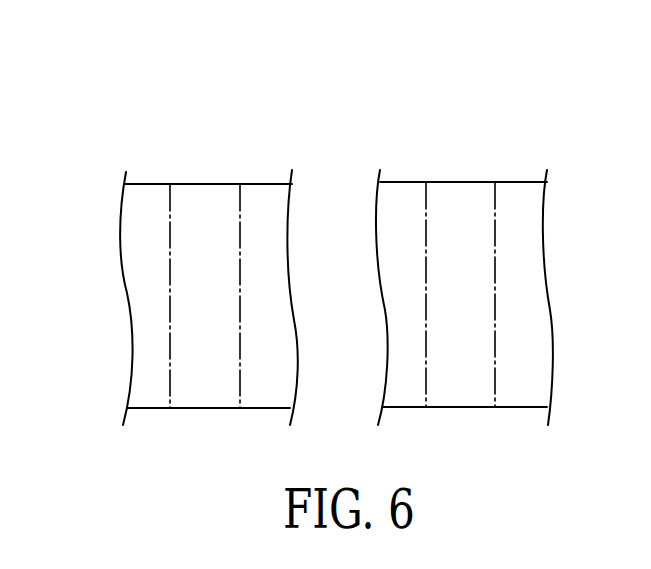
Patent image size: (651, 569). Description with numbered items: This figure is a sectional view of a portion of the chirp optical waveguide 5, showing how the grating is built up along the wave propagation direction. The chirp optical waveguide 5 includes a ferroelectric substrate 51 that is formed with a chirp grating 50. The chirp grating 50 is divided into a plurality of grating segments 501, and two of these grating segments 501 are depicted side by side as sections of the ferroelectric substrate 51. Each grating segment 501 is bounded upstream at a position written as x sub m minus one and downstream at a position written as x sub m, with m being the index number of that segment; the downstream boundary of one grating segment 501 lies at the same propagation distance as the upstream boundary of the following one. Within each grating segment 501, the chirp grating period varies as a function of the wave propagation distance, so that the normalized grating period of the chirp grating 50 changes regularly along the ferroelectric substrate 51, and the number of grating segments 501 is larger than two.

The chirp optical waveguide 5 is at (127, 93).
The chirp grating 50 is at (465, 92).
The grating segment 501 is at (257, 190).
The ferroelectric substrate 51 is at (133, 288).